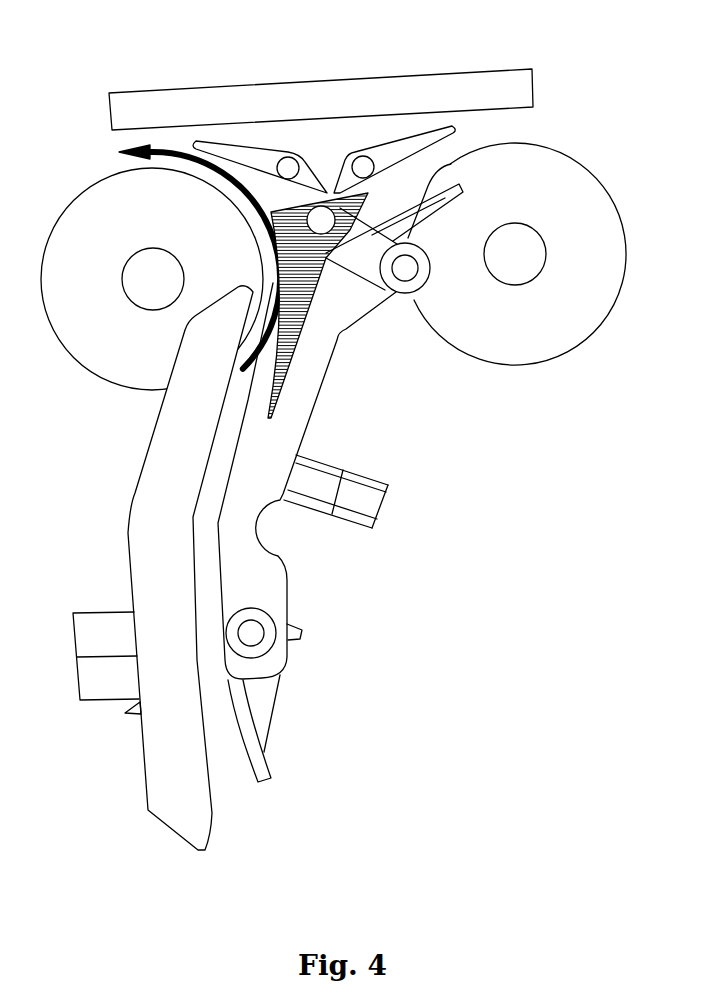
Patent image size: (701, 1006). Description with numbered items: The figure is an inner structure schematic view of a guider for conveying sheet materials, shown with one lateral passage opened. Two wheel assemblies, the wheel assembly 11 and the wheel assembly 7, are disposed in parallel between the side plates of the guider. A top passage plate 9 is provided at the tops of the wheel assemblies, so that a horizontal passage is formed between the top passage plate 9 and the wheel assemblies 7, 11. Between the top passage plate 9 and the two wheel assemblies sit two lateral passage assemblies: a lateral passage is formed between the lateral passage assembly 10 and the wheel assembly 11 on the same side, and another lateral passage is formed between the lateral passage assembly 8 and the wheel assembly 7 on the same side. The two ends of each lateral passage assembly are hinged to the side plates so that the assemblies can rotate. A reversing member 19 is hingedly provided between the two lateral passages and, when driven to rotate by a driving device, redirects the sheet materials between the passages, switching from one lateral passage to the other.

The wheel assembly 7 is at (473, 182).
The lateral passage assembly 8 is at (385, 155).
The top passage plate 9 is at (277, 97).
The lateral passage assembly 10 is at (218, 150).
The wheel assembly 11 is at (133, 193).
The reversing member 19 is at (337, 193).